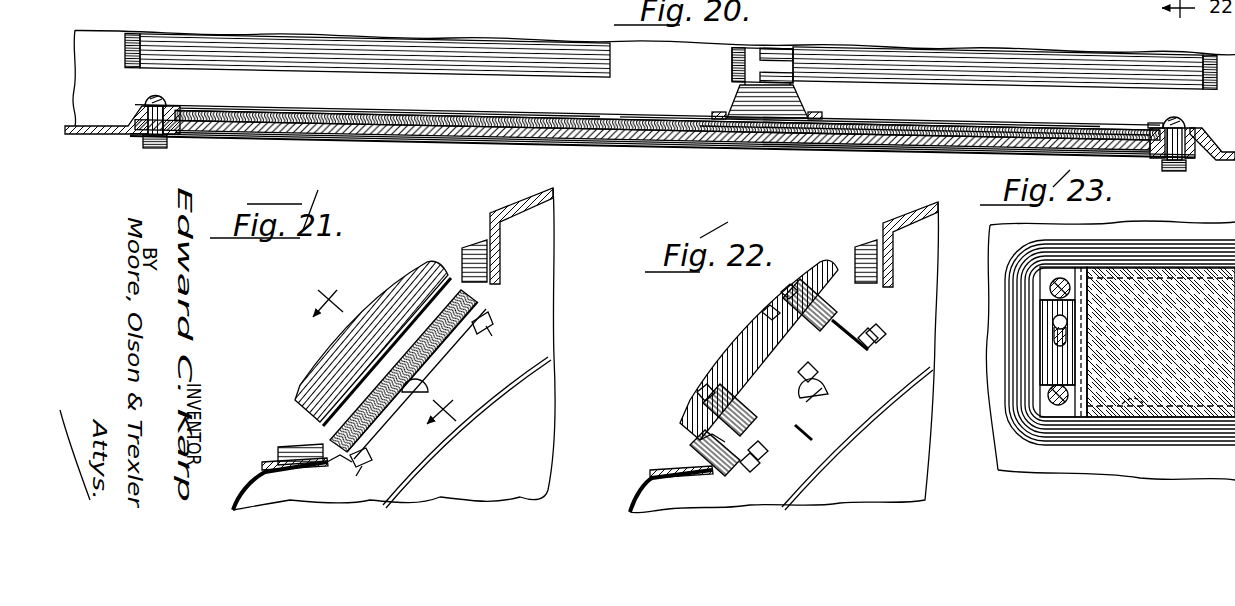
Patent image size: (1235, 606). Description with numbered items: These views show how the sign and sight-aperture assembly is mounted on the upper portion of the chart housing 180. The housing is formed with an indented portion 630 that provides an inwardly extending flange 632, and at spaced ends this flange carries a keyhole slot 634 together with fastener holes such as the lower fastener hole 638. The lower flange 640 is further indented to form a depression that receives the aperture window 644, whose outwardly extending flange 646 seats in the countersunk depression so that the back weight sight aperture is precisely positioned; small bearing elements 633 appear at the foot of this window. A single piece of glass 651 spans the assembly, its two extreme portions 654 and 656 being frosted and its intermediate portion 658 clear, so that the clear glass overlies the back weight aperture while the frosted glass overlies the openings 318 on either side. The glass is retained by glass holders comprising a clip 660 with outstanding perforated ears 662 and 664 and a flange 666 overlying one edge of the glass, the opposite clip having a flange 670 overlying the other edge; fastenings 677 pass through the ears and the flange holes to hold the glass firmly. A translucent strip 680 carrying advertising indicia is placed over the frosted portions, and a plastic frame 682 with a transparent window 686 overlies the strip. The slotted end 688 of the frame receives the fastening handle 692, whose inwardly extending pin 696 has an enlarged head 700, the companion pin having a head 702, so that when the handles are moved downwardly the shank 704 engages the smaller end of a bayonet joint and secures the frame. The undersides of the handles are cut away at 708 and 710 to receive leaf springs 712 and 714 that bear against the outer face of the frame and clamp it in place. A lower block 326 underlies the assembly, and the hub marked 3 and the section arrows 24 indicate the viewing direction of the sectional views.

In FIG. 20, the central hub 3 is at (762, 65).
In FIG. 21, the section line arrows 24 is at (393, 346).
In FIG. 20, the chart housing 180 is at (1038, 19).
In FIG. 21, the chart housing 180 is at (550, 200).
In FIG. 22, the chart housing 180 is at (905, 186).
In FIG. 23, the chart housing 180 is at (1174, 232).
In FIG. 21, the opening 318 is at (380, 425).
In FIG. 23, the opening 318 is at (1143, 403).
In FIG. 21, the lower block 326 is at (278, 467).
In FIG. 22, the lower block 326 is at (667, 467).
In FIG. 21, the indented portion 630 is at (275, 475).
In FIG. 21, the inwardly extending flange 632 is at (330, 479).
In FIG. 22, the inwardly extending flange 632 is at (783, 433).
In FIG. 20, the bearing block 633 is at (716, 112).
In FIG. 23, the keyhole slot 634 is at (1055, 323).
In FIG. 21, the lower fastener hole 638 is at (483, 318).
In FIG. 22, the lower fastener hole 638 is at (872, 322).
In FIG. 20, the lower flange 640 is at (310, 99).
In FIG. 20, the aperture window 644 is at (784, 112).
In FIG. 20, the outwardly extending flange 646 is at (722, 127).
In FIG. 20, the piece of glass 651 is at (609, 113).
In FIG. 21, the piece of glass 651 is at (432, 360).
In FIG. 20, the frosted portion 654 is at (335, 113).
In FIG. 23, the frosted portion 654 is at (1161, 342).
In FIG. 20, the frosted portion 656 is at (848, 128).
In FIG. 21, the frosted portion 656 is at (492, 283).
In FIG. 20, the clear portion 658 is at (742, 127).
In FIG. 22, the clip 660 is at (883, 282).
In FIG. 23, the clip 660 is at (1092, 330).
In FIG. 20, the perforated ear 662 is at (145, 104).
In FIG. 22, the perforated ear 662 is at (883, 298).
In FIG. 23, the perforated ear 662 is at (1050, 288).
In FIG. 22, the perforated ear 664 is at (760, 443).
In FIG. 23, the perforated ear 664 is at (1040, 397).
In FIG. 20, the flange 666 is at (215, 108).
In FIG. 23, the flange 666 is at (1095, 378).
In FIG. 20, the flange 670 is at (1157, 130).
In FIG. 22, the screw 677 is at (847, 277).
In FIG. 23, the screw 677 is at (1062, 284).
In FIG. 21, the translucent strip 680 is at (445, 343).
In FIG. 20, the plastic frame 682 is at (783, 146).
In FIG. 20, the transparent window 686 is at (428, 136).
In FIG. 21, the transparent window 686 is at (338, 428).
In FIG. 22, the slot 688 is at (837, 347).
In FIG. 20, the fastening handle 692 is at (160, 148).
In FIG. 21, the fastening handle 692 is at (383, 293).
In FIG. 22, the fastening handle 692 is at (740, 337).
In FIG. 22, the pin 696 is at (757, 318).
In FIG. 20, the enlarged head 700 is at (162, 100).
In FIG. 21, the enlarged head 700 is at (432, 393).
In FIG. 22, the enlarged head 700 is at (825, 392).
In FIG. 20, the enlarged head 702 is at (1180, 125).
In FIG. 22, the shank 704 is at (808, 400).
In FIG. 23, the shank 704 is at (1052, 340).
In FIG. 22, the cut away portion 708 is at (700, 410).
In FIG. 22, the cut away portion 710 is at (823, 273).
In FIG. 22, the leaf spring 712 is at (693, 403).
In FIG. 22, the leaf spring 714 is at (790, 296).